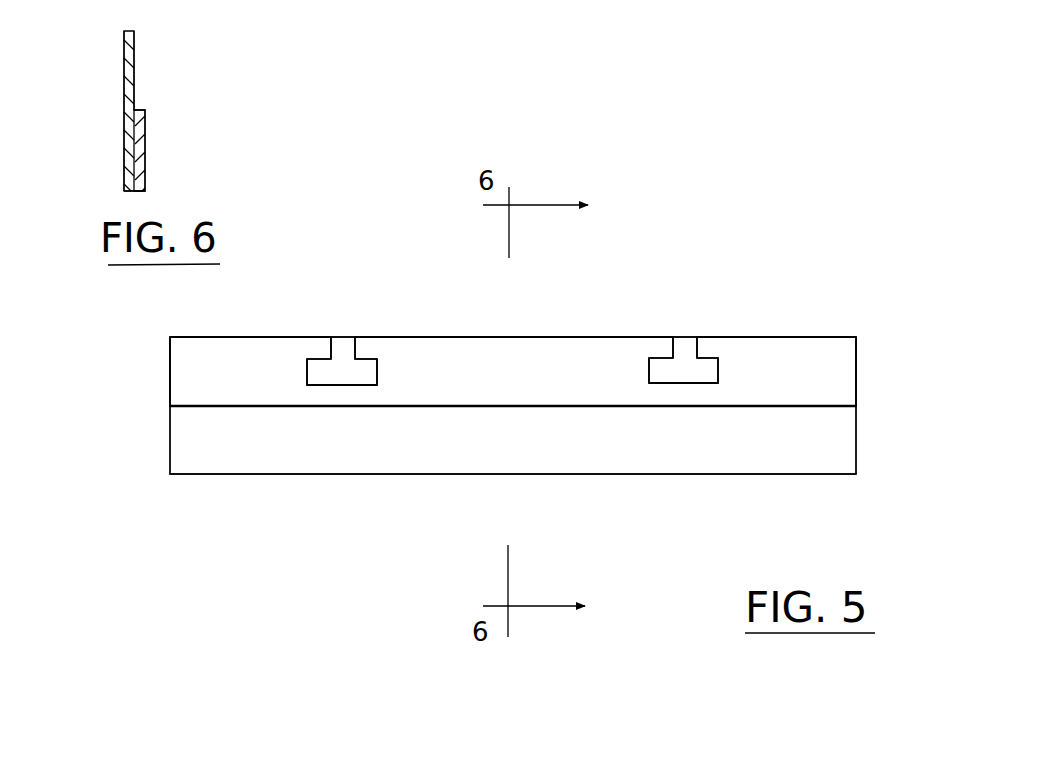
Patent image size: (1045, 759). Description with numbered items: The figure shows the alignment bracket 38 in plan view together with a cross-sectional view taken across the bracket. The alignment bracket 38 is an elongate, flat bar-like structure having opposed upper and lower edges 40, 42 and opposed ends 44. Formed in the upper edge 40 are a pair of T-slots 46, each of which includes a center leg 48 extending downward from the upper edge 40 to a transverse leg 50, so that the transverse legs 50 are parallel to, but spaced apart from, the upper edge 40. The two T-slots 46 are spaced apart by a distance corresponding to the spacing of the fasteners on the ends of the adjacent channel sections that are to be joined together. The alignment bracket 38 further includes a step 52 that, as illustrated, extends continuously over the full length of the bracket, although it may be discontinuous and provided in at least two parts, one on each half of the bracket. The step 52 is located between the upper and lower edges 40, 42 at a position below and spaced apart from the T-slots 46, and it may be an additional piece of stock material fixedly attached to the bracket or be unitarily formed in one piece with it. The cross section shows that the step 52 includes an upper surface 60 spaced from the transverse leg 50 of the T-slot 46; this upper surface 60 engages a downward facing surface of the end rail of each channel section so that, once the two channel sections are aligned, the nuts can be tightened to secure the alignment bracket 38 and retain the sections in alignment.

In FIG. 6, the alignment bracket 38 is at (212, 75).
In FIG. 5, the alignment bracket 38 is at (258, 505).
In FIG. 6, the upper edge 40 is at (127, 31).
In FIG. 5, the upper edge 40 is at (788, 337).
In FIG. 6, the lower edge 42 is at (128, 191).
In FIG. 5, the lower edge 42 is at (773, 475).
In FIG. 5, the ends 44 is at (170, 370).
In FIG. 5, the T-slots 46 is at (345, 330).
In FIG. 5, the center leg 48 is at (342, 353).
In FIG. 5, the transverse leg 50 is at (322, 372).
In FIG. 6, the step 52 is at (148, 108).
In FIG. 5, the step 52 is at (220, 404).
In FIG. 6, the upper surface 60 is at (137, 110).
In FIG. 5, the upper surface 60 is at (256, 405).